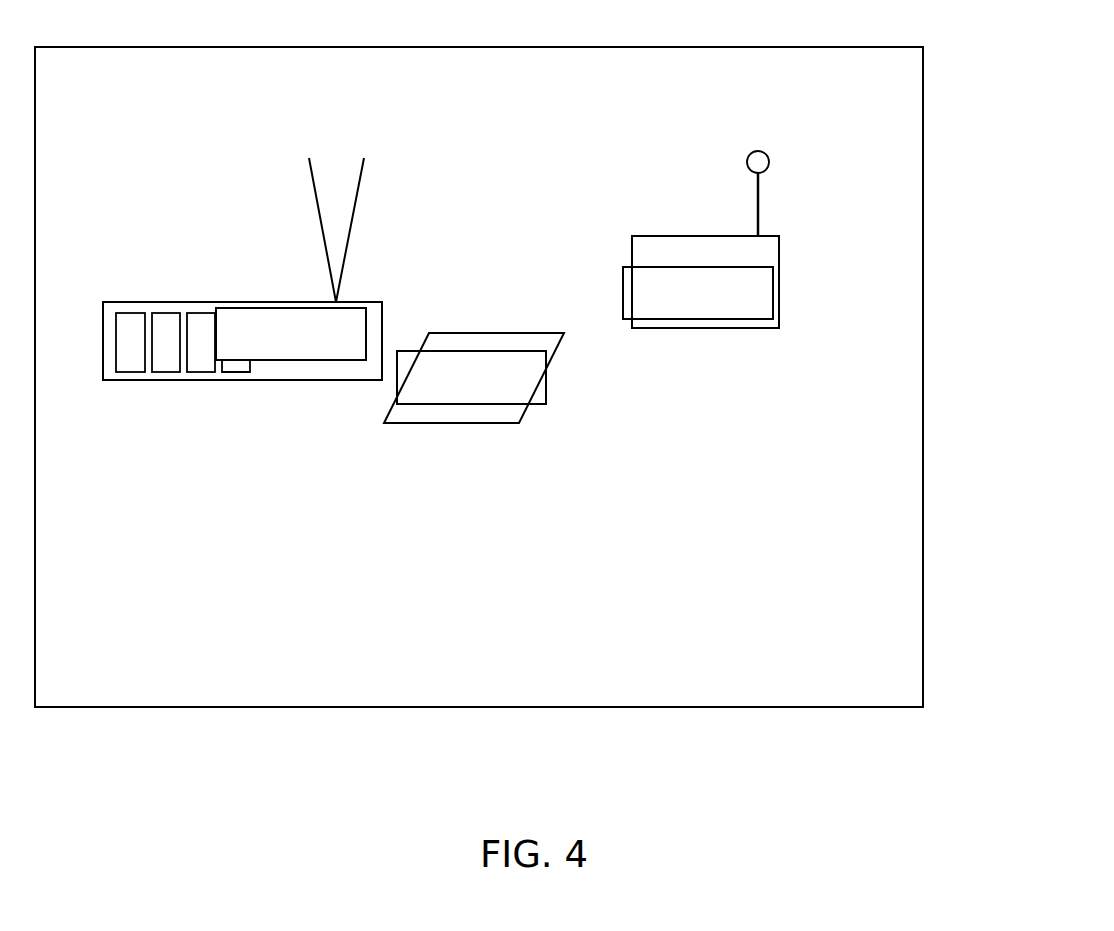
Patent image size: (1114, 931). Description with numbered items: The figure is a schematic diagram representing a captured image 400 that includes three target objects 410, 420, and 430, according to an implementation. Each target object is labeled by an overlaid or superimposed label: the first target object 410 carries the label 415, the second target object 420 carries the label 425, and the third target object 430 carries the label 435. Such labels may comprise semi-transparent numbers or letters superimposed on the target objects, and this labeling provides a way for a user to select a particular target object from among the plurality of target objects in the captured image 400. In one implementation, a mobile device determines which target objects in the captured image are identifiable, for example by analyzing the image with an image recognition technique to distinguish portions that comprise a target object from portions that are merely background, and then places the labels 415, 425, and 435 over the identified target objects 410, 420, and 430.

The captured image 400 is at (922, 492).
The target object 410 is at (177, 302).
The label 415 is at (300, 358).
The target object 420 is at (497, 332).
The label 425 is at (533, 347).
The target object 430 is at (649, 235).
The label 435 is at (758, 319).